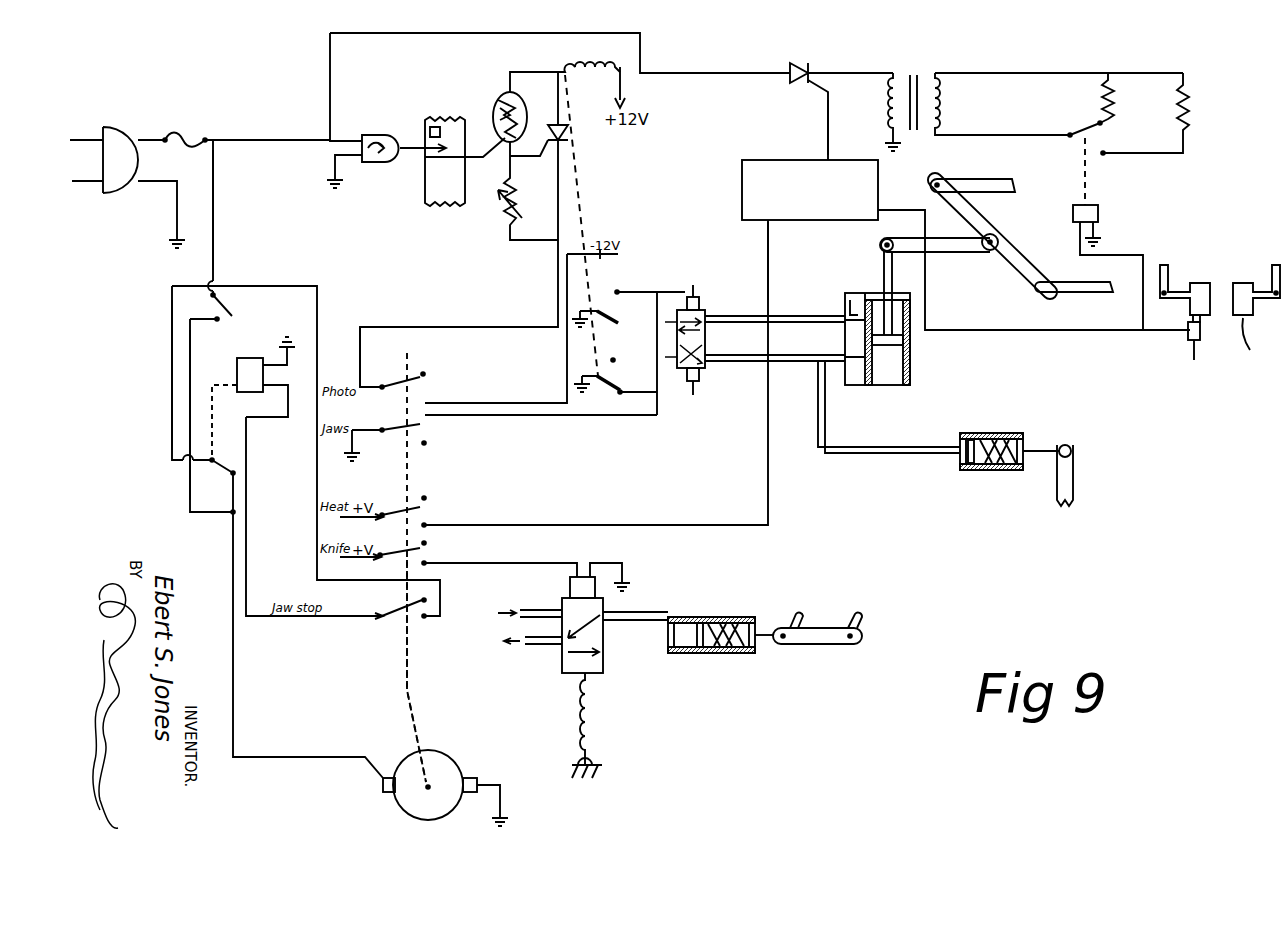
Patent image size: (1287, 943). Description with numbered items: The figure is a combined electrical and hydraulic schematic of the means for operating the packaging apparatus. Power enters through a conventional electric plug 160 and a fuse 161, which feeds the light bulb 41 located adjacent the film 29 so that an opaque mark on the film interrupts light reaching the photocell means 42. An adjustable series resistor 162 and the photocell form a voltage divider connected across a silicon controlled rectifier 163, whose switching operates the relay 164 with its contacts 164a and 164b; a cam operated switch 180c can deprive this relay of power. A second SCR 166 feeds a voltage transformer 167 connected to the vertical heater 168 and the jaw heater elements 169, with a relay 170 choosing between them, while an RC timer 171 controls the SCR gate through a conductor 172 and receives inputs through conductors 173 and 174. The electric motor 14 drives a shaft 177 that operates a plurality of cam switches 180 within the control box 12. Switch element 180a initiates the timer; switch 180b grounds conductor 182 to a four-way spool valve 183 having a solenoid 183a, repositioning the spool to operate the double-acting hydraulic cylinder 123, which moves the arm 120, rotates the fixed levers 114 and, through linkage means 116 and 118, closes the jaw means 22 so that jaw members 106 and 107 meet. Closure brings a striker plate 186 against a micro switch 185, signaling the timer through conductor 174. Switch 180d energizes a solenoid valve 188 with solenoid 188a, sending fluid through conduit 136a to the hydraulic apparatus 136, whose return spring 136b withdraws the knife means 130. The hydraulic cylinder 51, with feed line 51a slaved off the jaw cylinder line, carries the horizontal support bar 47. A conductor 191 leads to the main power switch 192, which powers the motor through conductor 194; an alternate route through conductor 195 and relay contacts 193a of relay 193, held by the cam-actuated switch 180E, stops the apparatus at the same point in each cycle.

The control box 12 is at (150, 486).
The electric motor 14 is at (445, 772).
The jaw means 22 is at (983, 262).
The film 29 is at (438, 205).
The light bulb 41 is at (388, 133).
The photocell means 42 is at (493, 100).
The horizontal support bar 47 is at (1052, 505).
The hydraulic cylinder 51 is at (983, 470).
The feed line 51a is at (888, 452).
The jaw member 106 is at (1193, 280).
The jaw member 107 is at (1244, 280).
The fixed levers 114 is at (980, 222).
The linkage means 116 is at (975, 183).
The linkage means 118 is at (1075, 285).
The arm 120 is at (895, 240).
The double-acting hydraulic cylinder 123 is at (915, 372).
The knife means 130 is at (786, 656).
The hydraulic apparatus 136 is at (712, 654).
The conduit 136a is at (640, 611).
The return spring 136b is at (742, 620).
The electric plug 160 is at (118, 128).
The fuse 161 is at (192, 125).
The adjustable series resistor 162 is at (515, 197).
The silicon controlled rectifier 163 is at (553, 120).
The relay 164 is at (585, 58).
The relay contacts 164a is at (609, 396).
The relay contacts 164b is at (602, 312).
The SCR 166 is at (805, 66).
The voltage transformer 167 is at (945, 85).
The vertical heater 168 is at (1098, 92).
The jaw heater elements 169 is at (1192, 95).
The relay 170 is at (1100, 210).
The RC timer 171 is at (742, 181).
The conductor 172 is at (828, 115).
The conductor 173 is at (768, 250).
The conductor 174 is at (1030, 333).
The shaft 177 is at (414, 698).
The switches 180 is at (367, 627).
The switch element 180a is at (405, 500).
The switch 180b is at (420, 428).
The cam operated switch 180c is at (406, 378).
The switch 180d is at (420, 556).
The cam-actuated switch 180E is at (408, 622).
The conductor 182 is at (513, 415).
The four-way spool valve 183 is at (706, 338).
The solenoid 183a is at (700, 305).
The micro switch 185 is at (1187, 340).
The striker plate 186 is at (1258, 344).
The solenoid valve 188 is at (560, 668).
The solenoid 188a is at (570, 588).
The conductor 191 is at (218, 225).
The switch 192 is at (228, 303).
The relay 193 is at (250, 365).
The relay contacts 193a is at (232, 470).
The conductor 194 is at (190, 412).
The conductor 195 is at (172, 307).